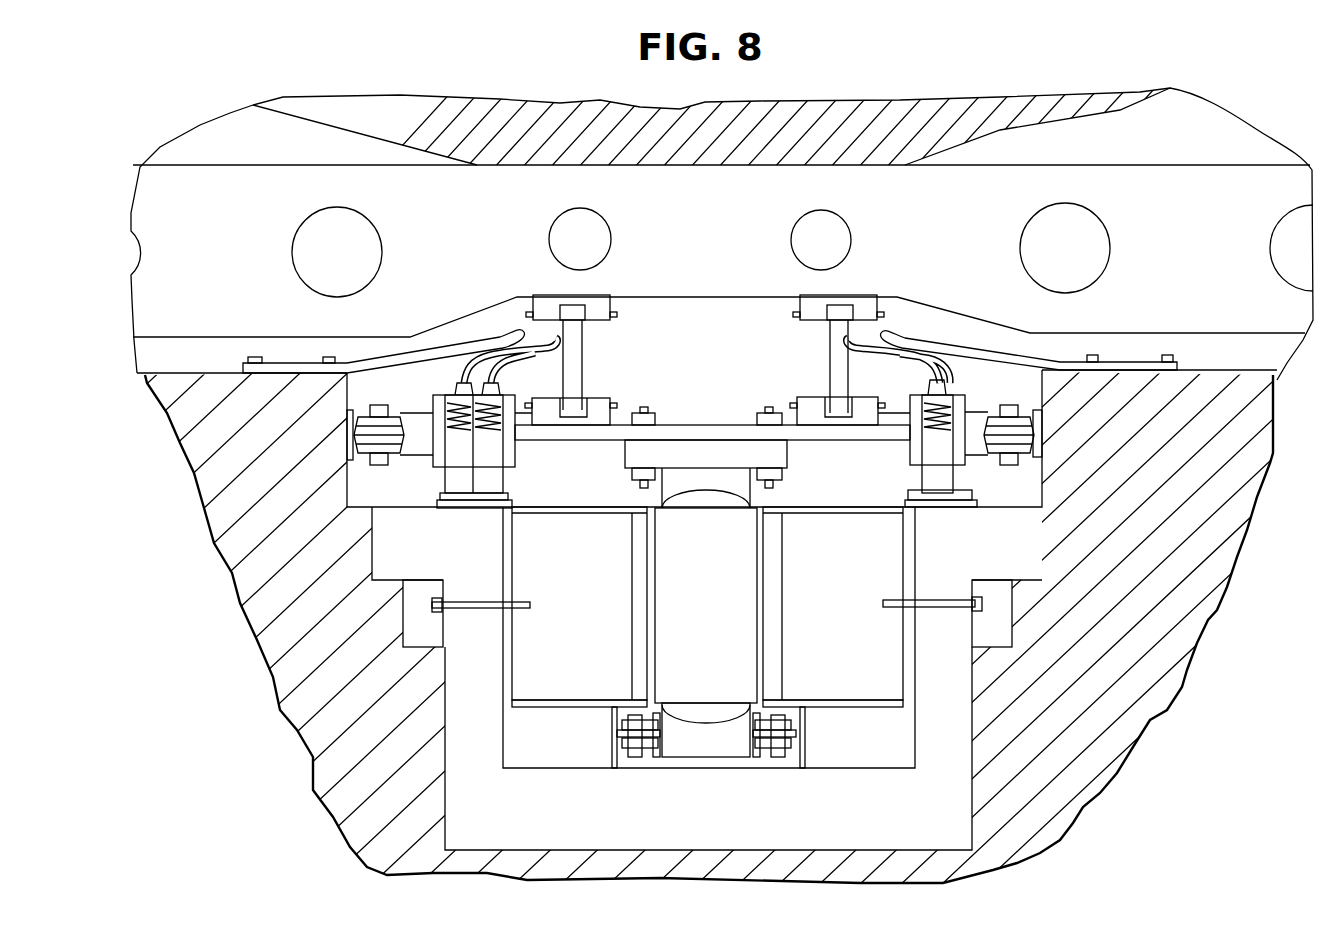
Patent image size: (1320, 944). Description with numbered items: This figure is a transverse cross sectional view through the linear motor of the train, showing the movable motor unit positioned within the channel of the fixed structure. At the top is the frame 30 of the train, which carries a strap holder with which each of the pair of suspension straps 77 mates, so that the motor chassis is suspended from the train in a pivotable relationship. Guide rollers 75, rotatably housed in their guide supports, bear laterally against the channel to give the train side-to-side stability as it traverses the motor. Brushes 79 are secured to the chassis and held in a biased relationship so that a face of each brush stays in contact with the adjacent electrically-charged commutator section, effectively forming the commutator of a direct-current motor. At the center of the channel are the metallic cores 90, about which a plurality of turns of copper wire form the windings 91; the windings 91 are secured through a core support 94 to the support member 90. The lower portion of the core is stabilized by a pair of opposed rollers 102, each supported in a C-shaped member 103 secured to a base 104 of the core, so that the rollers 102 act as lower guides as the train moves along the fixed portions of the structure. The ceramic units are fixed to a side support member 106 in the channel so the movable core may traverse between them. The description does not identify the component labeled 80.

The frame 30 is at (712, 236).
The guide rollers 75 is at (390, 428).
The suspension straps 77 is at (573, 353).
The brushes 79 is at (515, 455).
The cylinder 80 is at (660, 560).
The metallic cores 90 is at (706, 425).
The windings 91 is at (755, 505).
The core support 94 is at (787, 447).
The rollers 102 is at (790, 745).
The C-shaped member 103 is at (757, 757).
The base 104 is at (703, 757).
The side support member 106 is at (924, 674).